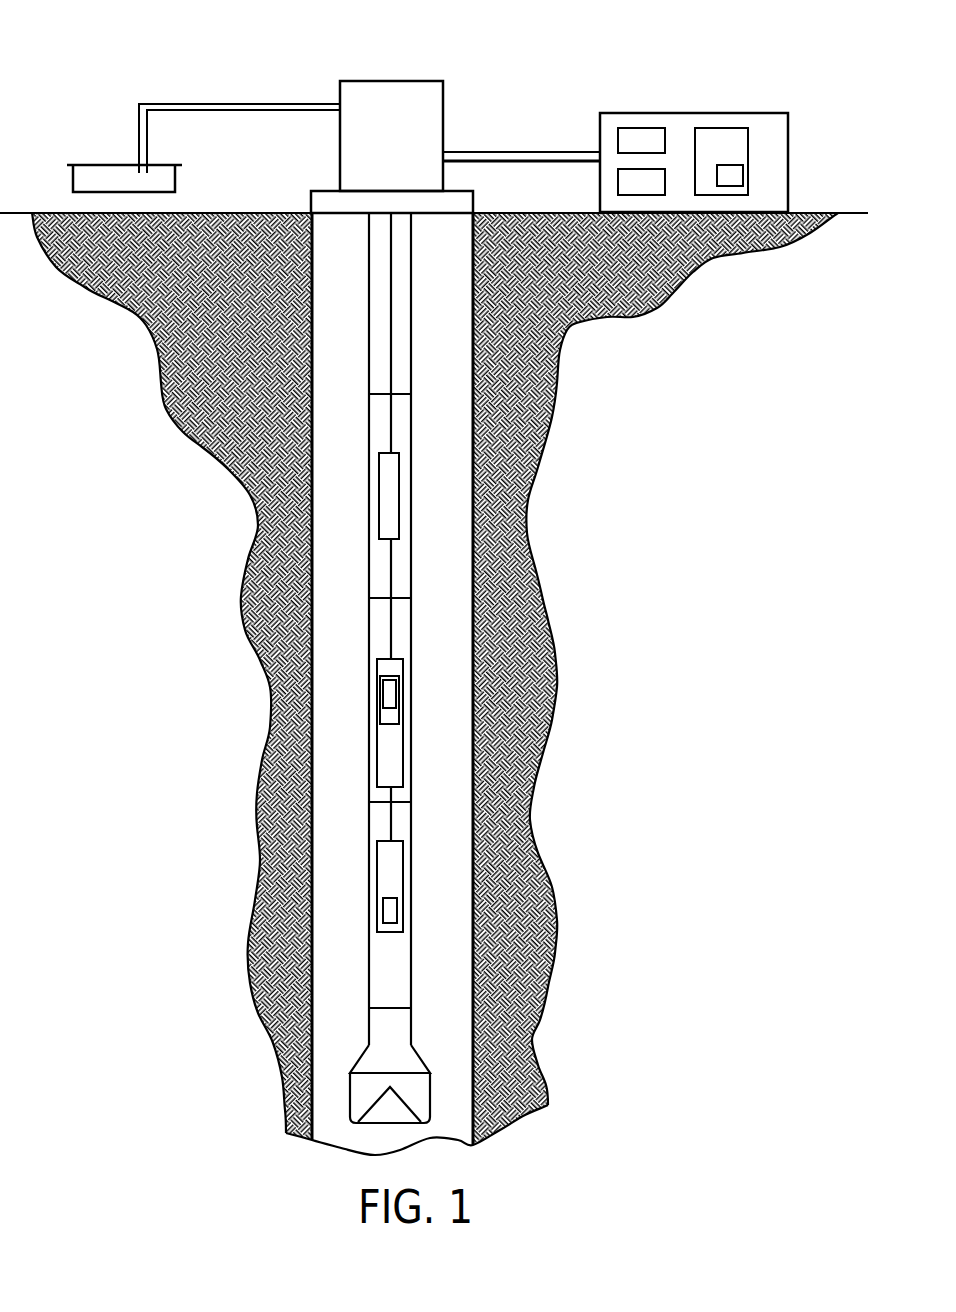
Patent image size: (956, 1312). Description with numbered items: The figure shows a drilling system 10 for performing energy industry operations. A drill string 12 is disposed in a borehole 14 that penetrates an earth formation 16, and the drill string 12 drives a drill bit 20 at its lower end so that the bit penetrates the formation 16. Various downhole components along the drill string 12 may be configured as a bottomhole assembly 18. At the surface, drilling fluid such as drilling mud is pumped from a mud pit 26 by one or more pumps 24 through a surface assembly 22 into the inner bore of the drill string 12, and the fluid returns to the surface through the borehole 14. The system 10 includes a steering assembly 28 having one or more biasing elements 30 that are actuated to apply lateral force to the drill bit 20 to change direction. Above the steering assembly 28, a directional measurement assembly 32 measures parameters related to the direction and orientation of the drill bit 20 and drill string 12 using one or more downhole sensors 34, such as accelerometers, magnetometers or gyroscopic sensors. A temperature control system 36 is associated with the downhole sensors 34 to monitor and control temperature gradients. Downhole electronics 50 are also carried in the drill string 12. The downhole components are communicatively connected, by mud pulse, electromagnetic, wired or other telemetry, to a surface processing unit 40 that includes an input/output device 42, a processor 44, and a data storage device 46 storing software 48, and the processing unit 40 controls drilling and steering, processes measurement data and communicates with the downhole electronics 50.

The system 10 is at (537, 68).
The drill string 12 is at (392, 679).
The borehole 14 is at (353, 440).
The earth formation 16 is at (217, 349).
The bottomhole assembly 18 is at (345, 992).
The drill bit 20 is at (415, 1068).
The surface assembly 22 is at (308, 71).
The pump 24 is at (390, 92).
The mud pit 26 is at (100, 172).
The steering assembly 28 is at (388, 870).
The biasing element 30 is at (397, 910).
The directional measurement assembly 32 is at (403, 696).
The downhole sensor 34 is at (392, 693).
The temperature control system 36 is at (380, 716).
The processing unit 40 is at (728, 112).
The input/output device 42 is at (632, 180).
The processor 44 is at (634, 136).
The data storage device 46 is at (735, 150).
The software 48 is at (733, 177).
The downhole electronics 50 is at (388, 495).